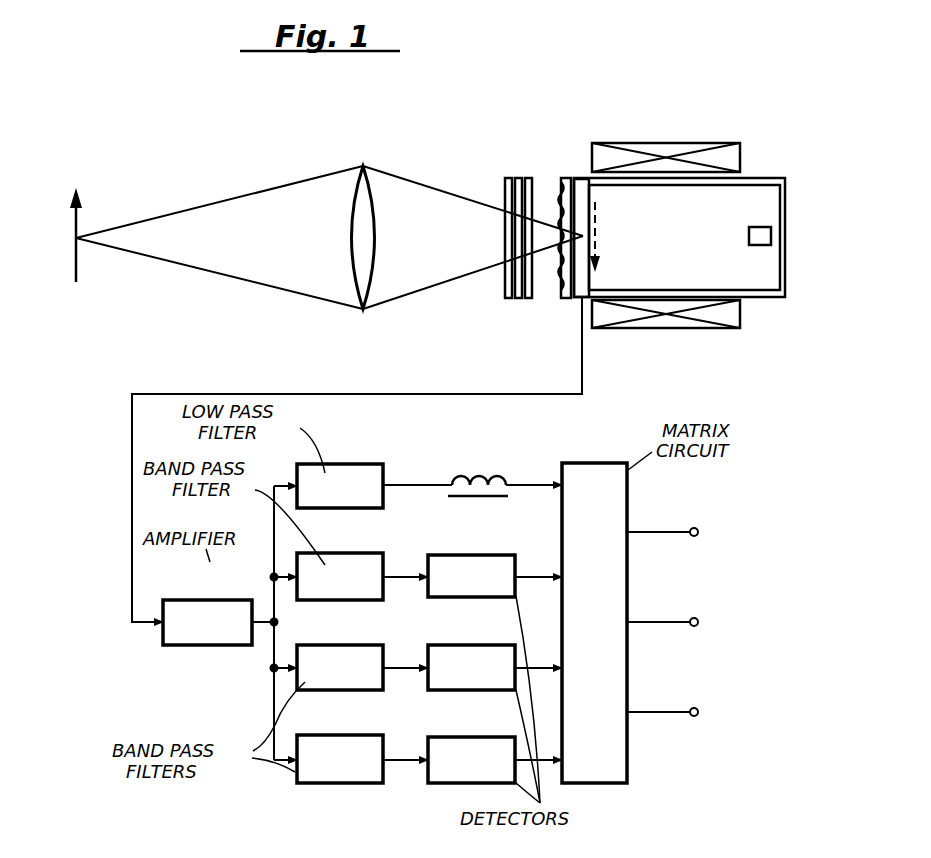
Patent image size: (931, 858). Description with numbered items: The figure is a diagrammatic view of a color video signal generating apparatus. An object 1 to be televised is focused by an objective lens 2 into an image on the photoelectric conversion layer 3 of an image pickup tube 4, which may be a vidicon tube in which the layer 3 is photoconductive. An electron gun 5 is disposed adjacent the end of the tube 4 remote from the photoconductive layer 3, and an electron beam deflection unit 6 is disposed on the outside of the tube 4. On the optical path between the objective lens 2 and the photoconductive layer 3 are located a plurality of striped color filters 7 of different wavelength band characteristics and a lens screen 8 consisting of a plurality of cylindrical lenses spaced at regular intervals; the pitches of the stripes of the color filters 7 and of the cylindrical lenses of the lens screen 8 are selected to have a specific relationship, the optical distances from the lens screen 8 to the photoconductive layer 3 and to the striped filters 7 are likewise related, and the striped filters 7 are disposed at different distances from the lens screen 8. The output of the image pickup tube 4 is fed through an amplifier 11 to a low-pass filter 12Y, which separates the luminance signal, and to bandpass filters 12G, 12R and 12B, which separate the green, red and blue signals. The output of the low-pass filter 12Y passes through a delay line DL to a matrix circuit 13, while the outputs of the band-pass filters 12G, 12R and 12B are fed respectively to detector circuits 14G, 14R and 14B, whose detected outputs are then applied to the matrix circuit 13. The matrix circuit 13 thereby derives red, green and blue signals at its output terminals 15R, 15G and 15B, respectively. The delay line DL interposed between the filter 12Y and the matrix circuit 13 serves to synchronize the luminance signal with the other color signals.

The object 1 is at (70, 222).
The objective lens 2 is at (365, 168).
The photoelectric conversion layer 3 is at (582, 178).
The image pickup tube 4 is at (770, 178).
The electron gun 5 is at (780, 235).
The electron beam deflection unit 6 is at (673, 143).
The striped color filters 7 is at (517, 178).
The lens screen 8 is at (563, 178).
The amplifier 11 is at (208, 600).
The low-pass filter 12Y is at (351, 464).
The bandpass filter 12G is at (351, 554).
The bandpass filter 12R is at (348, 645).
The bandpass filter 12B is at (348, 735).
The delay line DL is at (478, 475).
The detector circuit 14G is at (480, 555).
The detector circuit 14R is at (480, 645).
The detector circuit 14B is at (480, 737).
The matrix circuit 13 is at (597, 463).
The output terminal 15R is at (699, 532).
The output terminal 15G is at (699, 622).
The output terminal 15B is at (699, 712).